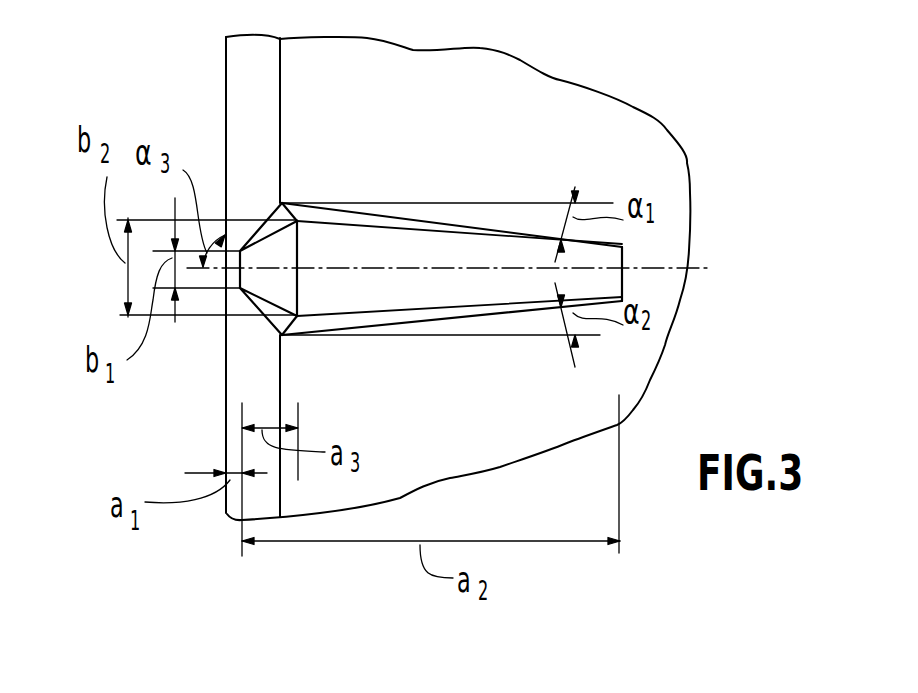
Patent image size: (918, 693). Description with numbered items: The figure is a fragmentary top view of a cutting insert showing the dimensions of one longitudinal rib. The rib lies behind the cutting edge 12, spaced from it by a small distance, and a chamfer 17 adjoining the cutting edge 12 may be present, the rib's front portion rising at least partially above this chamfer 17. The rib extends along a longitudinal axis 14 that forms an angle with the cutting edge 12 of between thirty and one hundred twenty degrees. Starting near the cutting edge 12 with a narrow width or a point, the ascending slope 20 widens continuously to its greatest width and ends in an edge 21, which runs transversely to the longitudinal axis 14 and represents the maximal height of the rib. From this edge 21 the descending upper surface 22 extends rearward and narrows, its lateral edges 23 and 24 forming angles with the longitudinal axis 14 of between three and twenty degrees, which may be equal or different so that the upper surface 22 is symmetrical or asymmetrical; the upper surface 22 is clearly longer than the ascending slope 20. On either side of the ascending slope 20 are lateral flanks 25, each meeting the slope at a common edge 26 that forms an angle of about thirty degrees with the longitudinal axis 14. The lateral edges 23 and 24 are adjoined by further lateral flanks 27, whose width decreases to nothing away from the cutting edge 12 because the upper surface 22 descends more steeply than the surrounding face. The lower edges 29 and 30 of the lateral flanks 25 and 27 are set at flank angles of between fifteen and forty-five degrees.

The cutting edge 12 is at (225, 390).
The longitudinal axis 14 is at (700, 270).
The chamfer 17 is at (242, 50).
The ascending slope 20 is at (283, 286).
The edge 21 is at (331, 228).
The upper surface 22 is at (417, 248).
The lateral edge 23 is at (438, 298).
The lateral edge 24 is at (478, 241).
The lateral flank 25 is at (282, 203).
The edge 26 is at (260, 313).
The lateral flank 27 is at (367, 217).
The lower edge 29 is at (252, 244).
The lower edge 30 is at (513, 310).